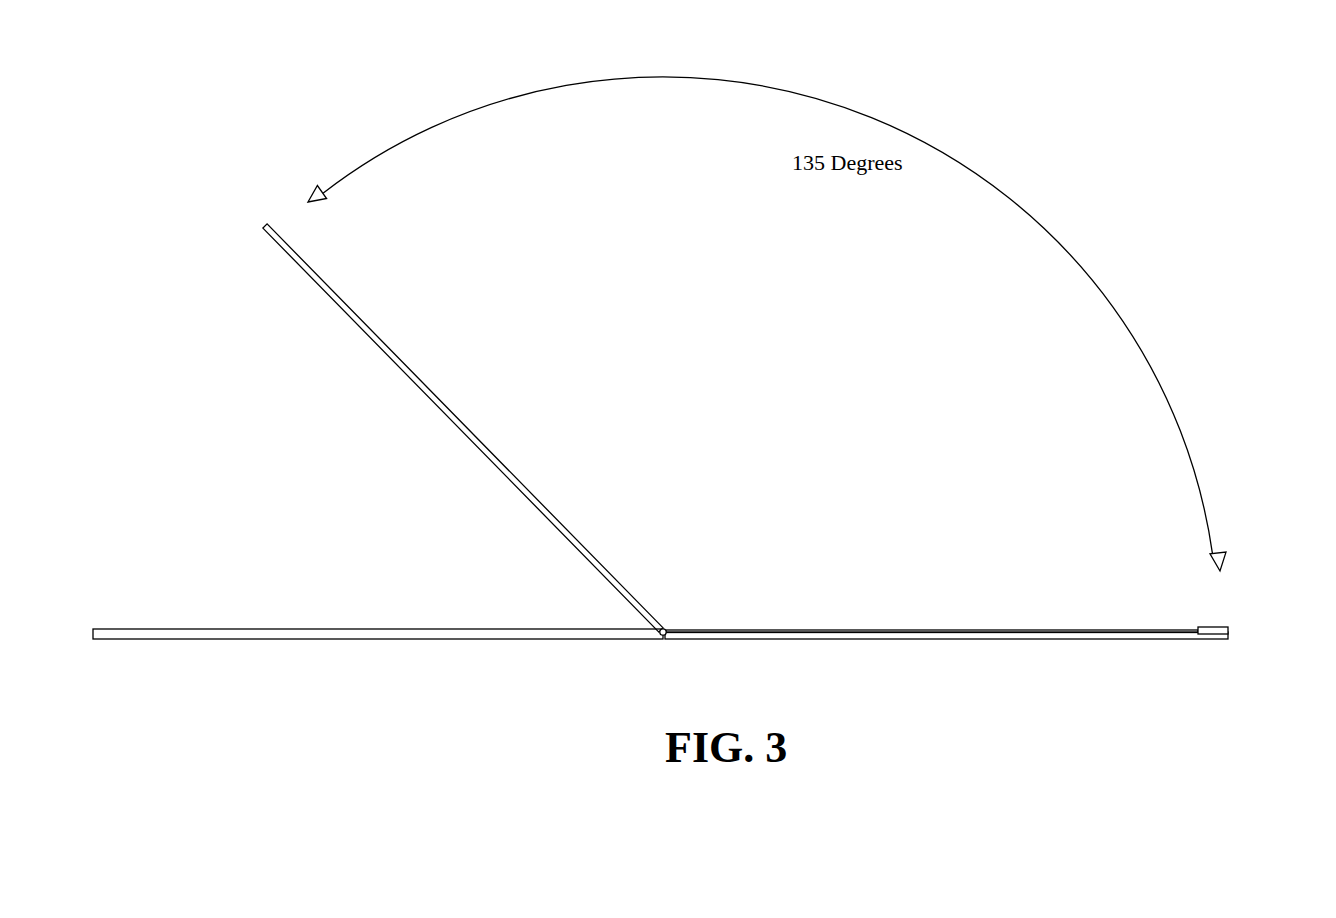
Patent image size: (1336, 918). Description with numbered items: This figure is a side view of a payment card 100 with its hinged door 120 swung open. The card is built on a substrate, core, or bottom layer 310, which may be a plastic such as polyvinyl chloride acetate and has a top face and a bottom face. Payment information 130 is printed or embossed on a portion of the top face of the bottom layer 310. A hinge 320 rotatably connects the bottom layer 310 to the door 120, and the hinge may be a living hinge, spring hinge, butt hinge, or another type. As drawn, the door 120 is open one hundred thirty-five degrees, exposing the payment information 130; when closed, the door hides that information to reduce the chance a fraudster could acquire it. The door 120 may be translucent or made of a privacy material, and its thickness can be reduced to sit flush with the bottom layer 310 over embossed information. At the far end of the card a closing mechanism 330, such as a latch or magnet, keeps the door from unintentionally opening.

The payment card 100 is at (1116, 55).
The door 120 is at (347, 216).
The payment information 130 is at (952, 580).
The bottom layer 310 is at (1025, 672).
The hinge 320 is at (680, 614).
The closing mechanism 330 is at (1230, 614).